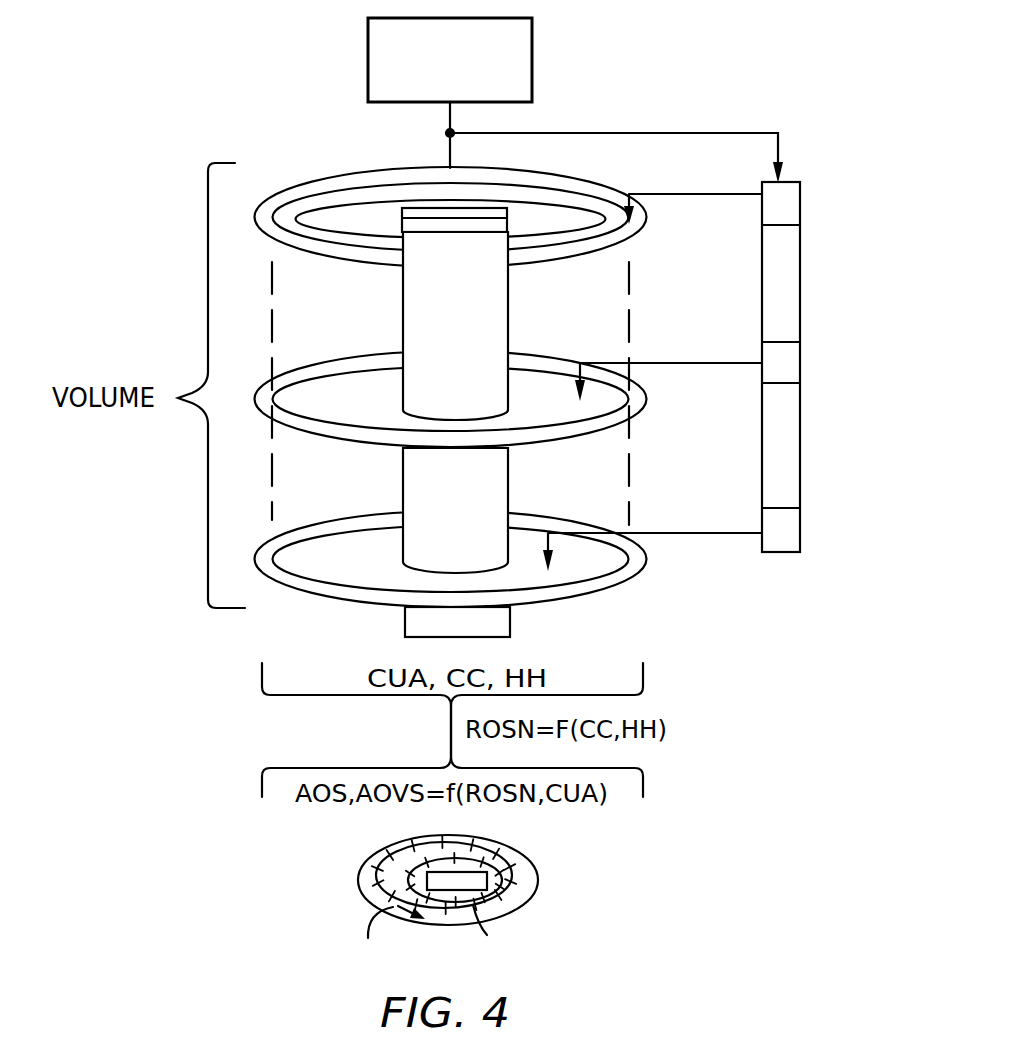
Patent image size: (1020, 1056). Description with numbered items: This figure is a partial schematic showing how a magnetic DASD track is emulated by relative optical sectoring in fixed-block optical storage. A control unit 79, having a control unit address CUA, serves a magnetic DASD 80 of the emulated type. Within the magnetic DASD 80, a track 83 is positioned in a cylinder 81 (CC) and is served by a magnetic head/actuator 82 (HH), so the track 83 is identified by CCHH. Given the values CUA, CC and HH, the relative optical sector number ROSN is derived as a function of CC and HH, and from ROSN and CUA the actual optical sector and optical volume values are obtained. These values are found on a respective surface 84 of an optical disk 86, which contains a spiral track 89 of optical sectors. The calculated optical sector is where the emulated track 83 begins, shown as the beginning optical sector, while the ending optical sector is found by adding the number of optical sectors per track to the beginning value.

The control unit 79 is at (533, 52).
The magnetic DASD 80 is at (772, 77).
The cylinder 81 is at (630, 296).
The magnetic head/actuator 82 is at (646, 213).
The track 83 is at (574, 172).
The surface 84 is at (501, 896).
The optical disk 86 is at (538, 888).
The spiral track 89 is at (383, 870).